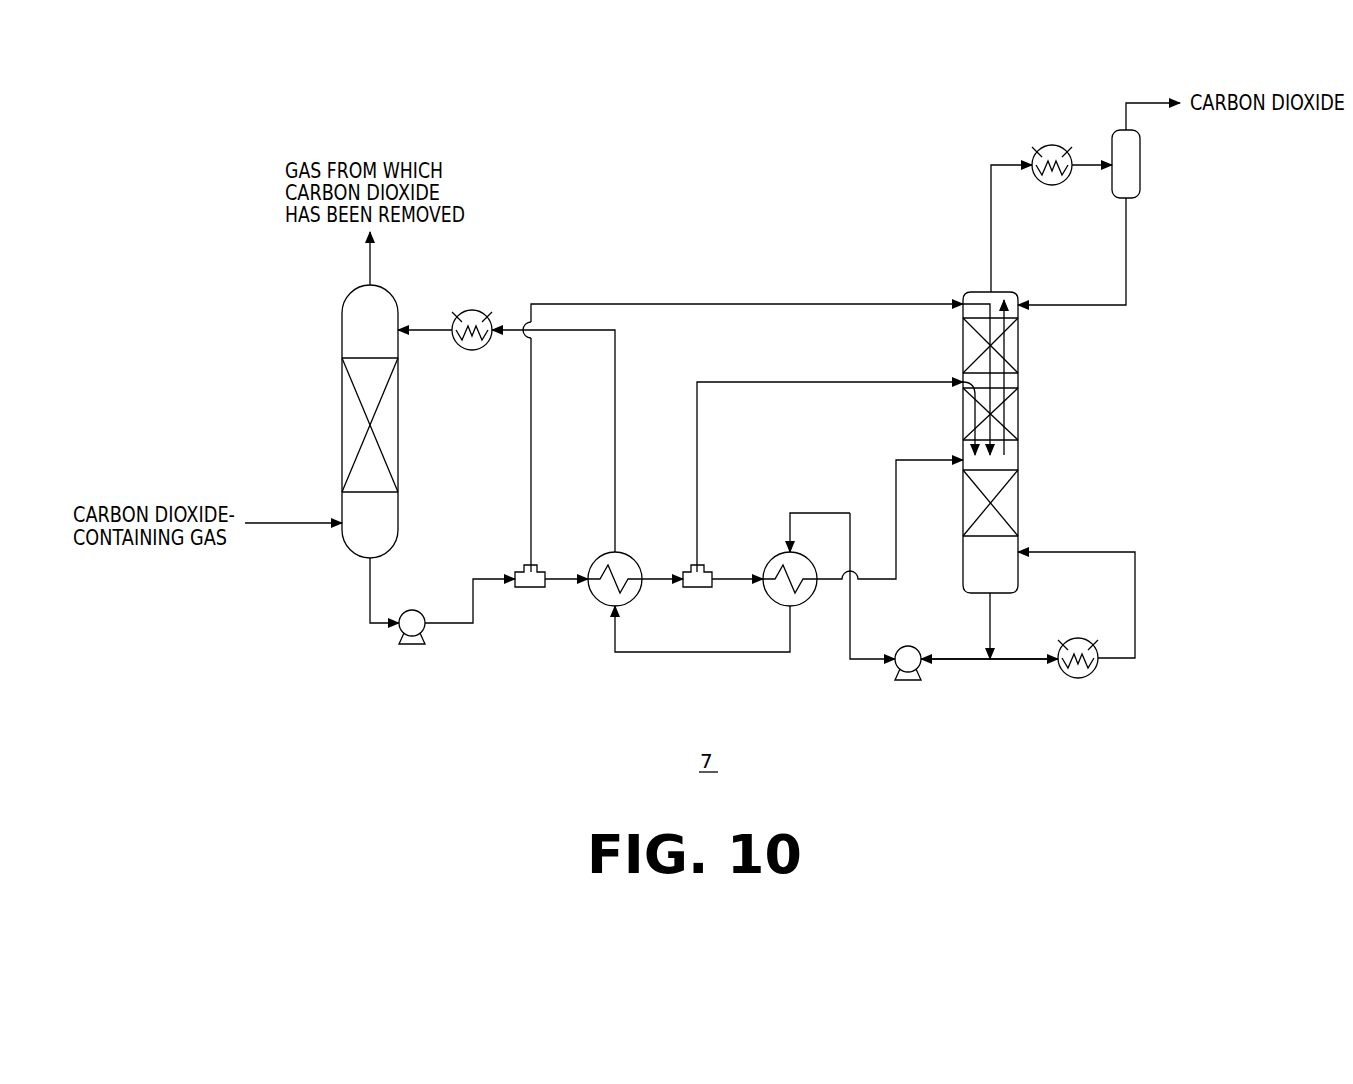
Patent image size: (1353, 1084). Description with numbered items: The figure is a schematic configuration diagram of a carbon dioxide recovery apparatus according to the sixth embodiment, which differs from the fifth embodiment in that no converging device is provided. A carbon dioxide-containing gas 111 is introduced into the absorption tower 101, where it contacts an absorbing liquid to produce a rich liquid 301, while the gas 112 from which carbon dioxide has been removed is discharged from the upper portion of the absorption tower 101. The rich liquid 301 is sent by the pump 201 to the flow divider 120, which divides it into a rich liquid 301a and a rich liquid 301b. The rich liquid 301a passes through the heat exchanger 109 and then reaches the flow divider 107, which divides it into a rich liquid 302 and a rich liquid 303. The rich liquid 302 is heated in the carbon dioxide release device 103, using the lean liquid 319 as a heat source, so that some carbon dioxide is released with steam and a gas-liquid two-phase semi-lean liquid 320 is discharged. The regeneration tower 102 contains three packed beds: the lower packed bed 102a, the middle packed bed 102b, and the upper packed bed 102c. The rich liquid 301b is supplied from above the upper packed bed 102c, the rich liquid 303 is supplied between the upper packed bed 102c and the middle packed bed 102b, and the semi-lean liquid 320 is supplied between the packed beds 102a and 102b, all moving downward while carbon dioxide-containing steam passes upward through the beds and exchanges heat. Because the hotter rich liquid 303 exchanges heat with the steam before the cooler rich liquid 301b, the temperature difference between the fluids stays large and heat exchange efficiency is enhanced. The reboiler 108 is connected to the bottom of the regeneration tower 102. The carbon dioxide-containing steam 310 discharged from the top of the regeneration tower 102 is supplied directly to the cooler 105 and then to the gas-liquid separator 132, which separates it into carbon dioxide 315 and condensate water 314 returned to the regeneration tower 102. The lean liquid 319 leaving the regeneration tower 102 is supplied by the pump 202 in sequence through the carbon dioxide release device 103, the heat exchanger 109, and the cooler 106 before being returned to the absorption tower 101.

The absorption tower 101 is at (342, 330).
The regeneration tower 102 is at (1009, 442).
The packed bed 102a is at (1018, 500).
The packed bed 102b is at (1018, 418).
The packed bed 102c is at (1018, 345).
The carbon dioxide release device 103 is at (805, 602).
The cooler 105 is at (1052, 185).
The cooler 106 is at (472, 310).
The flow divider 107 is at (697, 588).
The reboiler 108 is at (1085, 676).
The heat exchanger 109 is at (632, 556).
The carbon dioxide-containing gas 111 is at (283, 523).
The gas from which carbon dioxide has been removed 112 is at (370, 262).
The flow divider 120 is at (530, 588).
The gas-liquid separator 132 is at (1140, 164).
The pump 201 is at (412, 610).
The pump 202 is at (908, 646).
The rich liquid 301 is at (370, 602).
The rich liquid 301a is at (560, 579).
The rich liquid 301b is at (531, 440).
The rich liquid 302 is at (720, 579).
The rich liquid 303 is at (783, 382).
The carbon dioxide-containing steam 310 is at (991, 225).
The condensate water 314 is at (1126, 265).
The carbon dioxide 315 is at (1126, 103).
The lean liquid 319 is at (432, 332).
The semi-lean liquid 320 is at (896, 488).